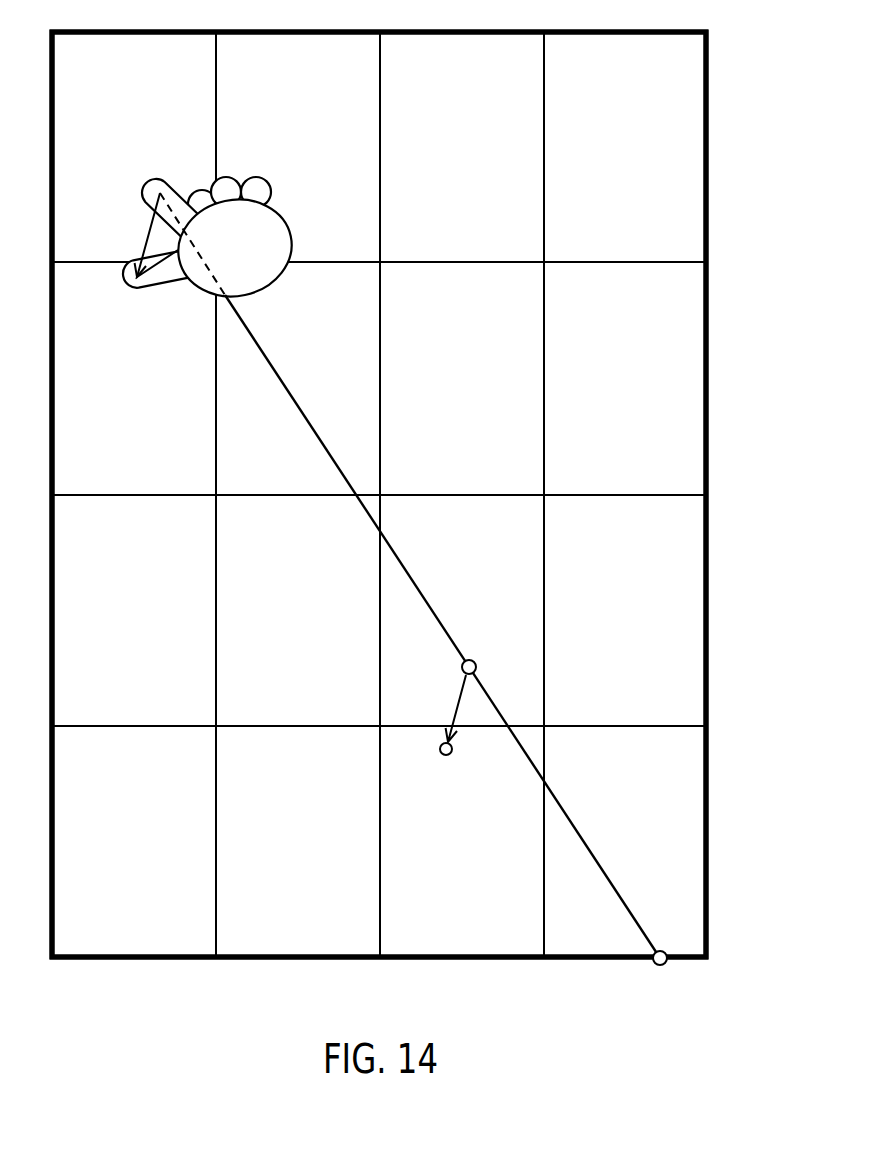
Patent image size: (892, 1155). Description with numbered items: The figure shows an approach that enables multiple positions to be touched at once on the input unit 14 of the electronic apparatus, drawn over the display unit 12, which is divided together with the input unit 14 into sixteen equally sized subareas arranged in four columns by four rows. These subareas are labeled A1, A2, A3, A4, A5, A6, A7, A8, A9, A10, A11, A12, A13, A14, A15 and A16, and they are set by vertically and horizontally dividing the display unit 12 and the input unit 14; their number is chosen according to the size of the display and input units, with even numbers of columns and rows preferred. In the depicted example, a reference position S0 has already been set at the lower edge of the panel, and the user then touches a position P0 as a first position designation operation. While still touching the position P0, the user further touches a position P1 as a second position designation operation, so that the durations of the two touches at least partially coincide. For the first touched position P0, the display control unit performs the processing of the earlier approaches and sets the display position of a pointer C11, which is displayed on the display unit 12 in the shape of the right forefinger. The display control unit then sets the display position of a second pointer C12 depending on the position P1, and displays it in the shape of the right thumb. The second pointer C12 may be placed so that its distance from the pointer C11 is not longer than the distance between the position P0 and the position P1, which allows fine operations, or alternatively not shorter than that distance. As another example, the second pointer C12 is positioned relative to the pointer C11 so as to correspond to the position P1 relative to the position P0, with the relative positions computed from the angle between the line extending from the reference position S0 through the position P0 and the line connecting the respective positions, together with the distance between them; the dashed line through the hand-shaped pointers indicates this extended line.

The subarea A1 is at (625, 841).
The subarea A2 is at (462, 841).
The subarea A3 is at (298, 841).
The subarea A4 is at (134, 841).
The subarea A5 is at (625, 610).
The subarea A6 is at (462, 610).
The subarea A7 is at (298, 610).
The subarea A8 is at (134, 610).
The subarea A9 is at (625, 378).
The subarea A10 is at (462, 378).
The subarea A11 is at (298, 378).
The subarea A12 is at (134, 378).
The subarea A13 is at (625, 147).
The subarea A14 is at (462, 147).
The subarea A15 is at (298, 147).
The subarea A16 is at (134, 147).
The pointer C11 is at (160, 178).
The second pointer C12 is at (138, 292).
The position P0 is at (476, 667).
The position P1 is at (446, 755).
The reference position S0 is at (664, 965).
The display unit 12 is at (157, 960).
The input unit 14 is at (379, 494).